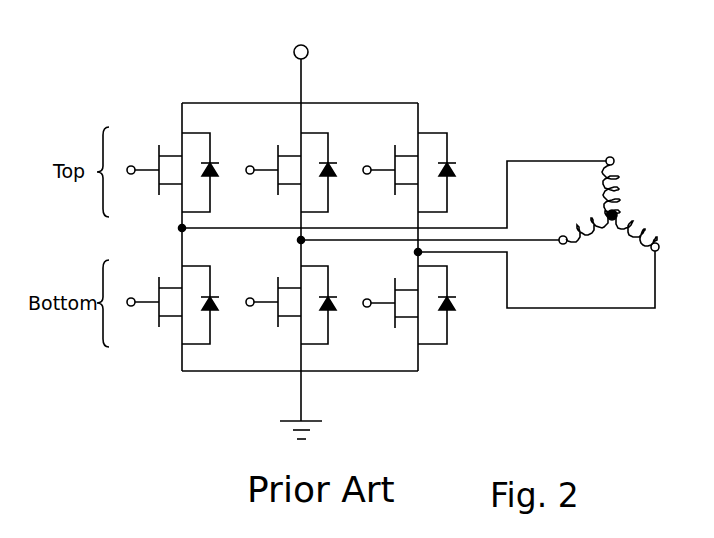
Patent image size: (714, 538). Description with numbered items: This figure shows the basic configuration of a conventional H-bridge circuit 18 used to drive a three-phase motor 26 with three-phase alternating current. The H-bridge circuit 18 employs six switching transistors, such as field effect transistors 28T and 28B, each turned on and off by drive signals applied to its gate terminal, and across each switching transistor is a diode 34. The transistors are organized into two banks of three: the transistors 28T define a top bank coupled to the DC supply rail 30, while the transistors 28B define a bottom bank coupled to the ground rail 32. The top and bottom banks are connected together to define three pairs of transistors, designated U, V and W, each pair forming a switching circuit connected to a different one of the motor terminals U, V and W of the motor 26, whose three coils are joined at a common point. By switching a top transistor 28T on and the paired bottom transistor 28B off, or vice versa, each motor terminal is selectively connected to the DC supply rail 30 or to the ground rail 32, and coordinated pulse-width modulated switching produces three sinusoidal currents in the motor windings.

The H-bridge circuit 18 is at (382, 85).
The three-phase motor 26 is at (662, 175).
The field effect transistors of the top bank 28T is at (157, 147).
The field effect transistors of the bottom bank 28B is at (157, 327).
The DC supply rail 30 is at (300, 70).
The ground rail 32 is at (283, 424).
The diode 34 is at (216, 176).